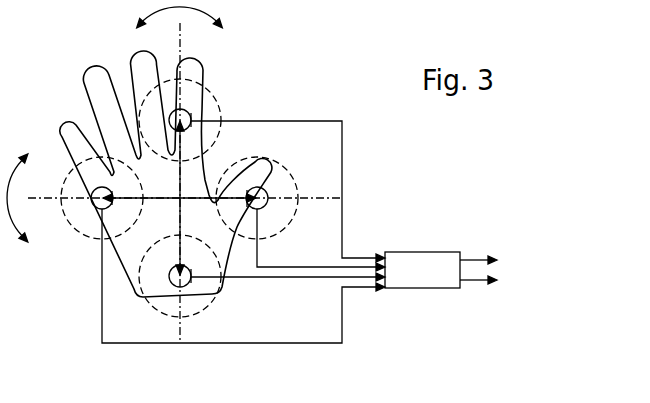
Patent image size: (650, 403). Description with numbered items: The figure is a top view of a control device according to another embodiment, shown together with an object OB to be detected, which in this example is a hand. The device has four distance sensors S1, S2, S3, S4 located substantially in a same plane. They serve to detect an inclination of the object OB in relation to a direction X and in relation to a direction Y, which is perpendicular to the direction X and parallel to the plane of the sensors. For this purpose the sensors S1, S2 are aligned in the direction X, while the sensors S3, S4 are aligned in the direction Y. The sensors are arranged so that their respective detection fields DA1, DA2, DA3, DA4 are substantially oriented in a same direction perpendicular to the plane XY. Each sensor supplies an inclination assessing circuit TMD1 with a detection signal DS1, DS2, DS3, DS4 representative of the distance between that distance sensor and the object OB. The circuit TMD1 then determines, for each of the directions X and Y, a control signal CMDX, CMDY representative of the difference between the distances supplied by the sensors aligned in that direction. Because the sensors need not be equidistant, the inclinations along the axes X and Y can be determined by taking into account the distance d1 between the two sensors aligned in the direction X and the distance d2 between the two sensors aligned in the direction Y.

The object OB is at (97, 93).
The direction X is at (49, 197).
The direction Y is at (183, 42).
The distance sensor S1 is at (101, 210).
The distance sensor S2 is at (267, 203).
The distance sensor S3 is at (193, 114).
The distance sensor S4 is at (168, 282).
The detection field DA1 is at (70, 222).
The detection field DA2 is at (284, 168).
The detection field DA3 is at (219, 110).
The detection field DA4 is at (206, 309).
The distance between the sensors S1 and S2 d1 is at (179, 191).
The distance between the sensors S3 and S4 d2 is at (190, 198).
The detection signal DS1 is at (243, 277).
The detection signal DS2 is at (321, 240).
The detection signal DS3 is at (288, 191).
The detection signal DS4 is at (288, 284).
The inclination assessing circuit TMD1 is at (449, 280).
The control signal CMDX is at (507, 259).
The control signal CMDY is at (506, 279).